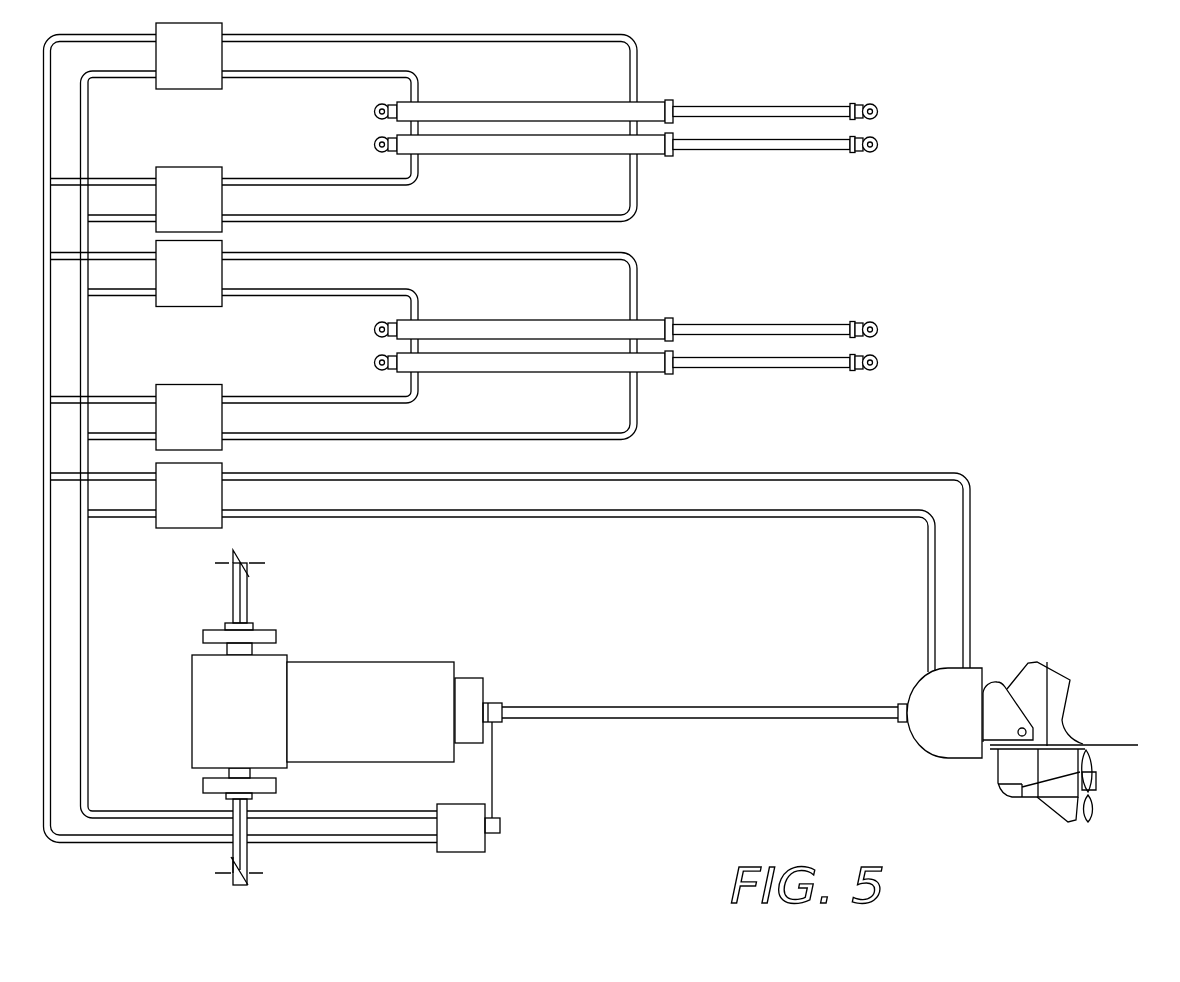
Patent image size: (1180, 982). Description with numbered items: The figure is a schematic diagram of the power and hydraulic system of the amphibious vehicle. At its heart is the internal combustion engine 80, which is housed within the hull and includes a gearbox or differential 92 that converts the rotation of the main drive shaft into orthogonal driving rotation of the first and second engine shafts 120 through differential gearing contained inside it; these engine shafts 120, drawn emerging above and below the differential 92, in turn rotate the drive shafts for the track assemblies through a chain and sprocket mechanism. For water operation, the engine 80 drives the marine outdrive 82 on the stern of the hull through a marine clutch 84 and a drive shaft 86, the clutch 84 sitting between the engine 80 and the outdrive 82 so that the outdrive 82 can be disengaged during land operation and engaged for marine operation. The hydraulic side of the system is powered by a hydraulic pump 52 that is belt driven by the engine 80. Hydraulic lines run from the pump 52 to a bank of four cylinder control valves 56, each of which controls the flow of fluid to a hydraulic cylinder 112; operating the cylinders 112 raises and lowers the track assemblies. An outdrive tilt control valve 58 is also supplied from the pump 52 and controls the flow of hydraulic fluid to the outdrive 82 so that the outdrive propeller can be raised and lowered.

The hydraulic pump 52 is at (444, 840).
The cylinder control valve 56 is at (171, 71).
The outdrive tilt control valve 58 is at (171, 511).
The internal combustion engine 80 is at (348, 724).
The marine outdrive 82 is at (1057, 629).
The marine clutch 84 is at (476, 677).
The drive shaft 86 is at (796, 706).
The gearbox or differential 92 is at (223, 724).
The hydraulic cylinder 112 is at (653, 101).
The engine shaft 120 is at (232, 597).